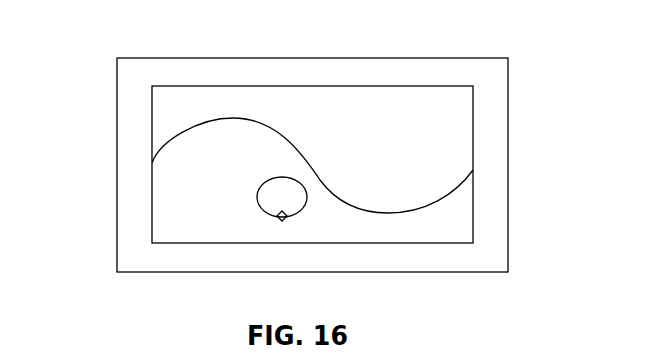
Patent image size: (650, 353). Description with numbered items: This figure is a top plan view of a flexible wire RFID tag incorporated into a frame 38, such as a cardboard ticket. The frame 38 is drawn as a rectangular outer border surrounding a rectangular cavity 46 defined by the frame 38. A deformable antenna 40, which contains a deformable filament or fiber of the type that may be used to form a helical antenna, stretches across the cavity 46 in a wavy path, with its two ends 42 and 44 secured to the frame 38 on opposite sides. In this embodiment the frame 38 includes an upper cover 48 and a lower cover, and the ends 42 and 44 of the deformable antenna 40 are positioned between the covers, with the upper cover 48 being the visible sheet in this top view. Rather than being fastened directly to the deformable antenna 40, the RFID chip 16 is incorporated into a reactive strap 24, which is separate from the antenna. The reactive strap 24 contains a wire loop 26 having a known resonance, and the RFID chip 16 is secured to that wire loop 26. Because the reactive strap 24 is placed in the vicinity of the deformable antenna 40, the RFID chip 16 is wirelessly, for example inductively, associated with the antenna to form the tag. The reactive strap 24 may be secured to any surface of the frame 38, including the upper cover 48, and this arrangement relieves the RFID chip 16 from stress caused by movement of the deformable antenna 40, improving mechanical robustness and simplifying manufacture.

The RFID chip 16 is at (282, 221).
The reactive strap 24 is at (243, 198).
The wire loop 26 is at (306, 192).
The frame 38 is at (112, 80).
The deformable antenna 40 is at (233, 117).
The first end of the deformable antenna 42 is at (153, 170).
The second end of the deformable antenna 44 is at (486, 167).
The cavity 46 is at (342, 102).
The upper cover 48 is at (488, 70).